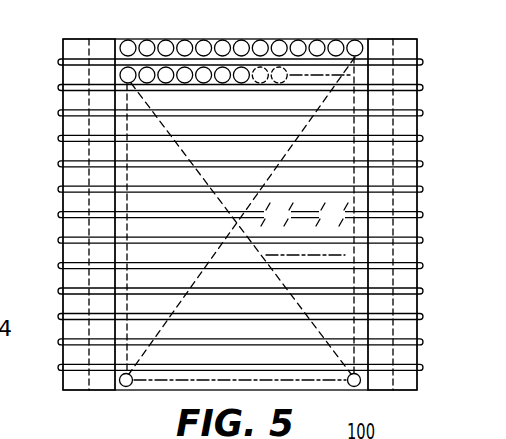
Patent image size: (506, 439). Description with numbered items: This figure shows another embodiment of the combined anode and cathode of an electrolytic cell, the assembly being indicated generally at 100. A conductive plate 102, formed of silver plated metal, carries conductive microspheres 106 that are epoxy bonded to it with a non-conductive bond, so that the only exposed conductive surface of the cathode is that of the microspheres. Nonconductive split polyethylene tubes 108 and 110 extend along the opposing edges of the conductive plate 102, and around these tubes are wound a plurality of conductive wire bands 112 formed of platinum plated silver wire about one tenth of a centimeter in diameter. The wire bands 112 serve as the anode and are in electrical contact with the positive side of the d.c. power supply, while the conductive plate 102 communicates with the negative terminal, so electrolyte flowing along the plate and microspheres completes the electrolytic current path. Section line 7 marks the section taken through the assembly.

The assembly 100 is at (423, 112).
The conductive plate 102 is at (299, 38).
The conductive microspheres 106 is at (222, 72).
The nonconductive split polyethylene tube 108 is at (399, 52).
The nonconductive split polyethylene tube 110 is at (72, 75).
The conductive wire bands 112 is at (168, 392).
The section line 7- 7 is at (279, 242).